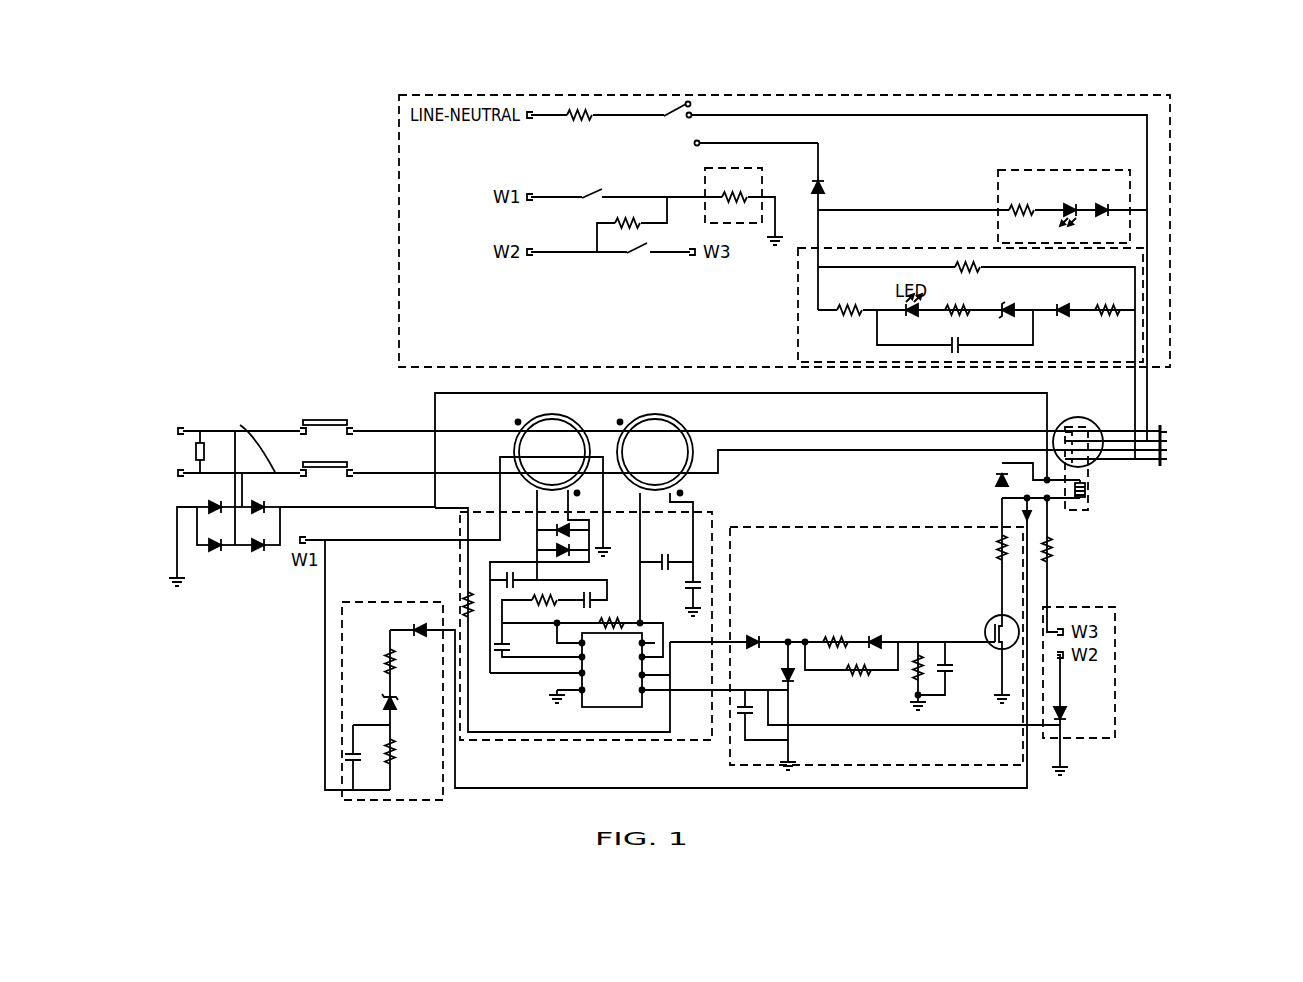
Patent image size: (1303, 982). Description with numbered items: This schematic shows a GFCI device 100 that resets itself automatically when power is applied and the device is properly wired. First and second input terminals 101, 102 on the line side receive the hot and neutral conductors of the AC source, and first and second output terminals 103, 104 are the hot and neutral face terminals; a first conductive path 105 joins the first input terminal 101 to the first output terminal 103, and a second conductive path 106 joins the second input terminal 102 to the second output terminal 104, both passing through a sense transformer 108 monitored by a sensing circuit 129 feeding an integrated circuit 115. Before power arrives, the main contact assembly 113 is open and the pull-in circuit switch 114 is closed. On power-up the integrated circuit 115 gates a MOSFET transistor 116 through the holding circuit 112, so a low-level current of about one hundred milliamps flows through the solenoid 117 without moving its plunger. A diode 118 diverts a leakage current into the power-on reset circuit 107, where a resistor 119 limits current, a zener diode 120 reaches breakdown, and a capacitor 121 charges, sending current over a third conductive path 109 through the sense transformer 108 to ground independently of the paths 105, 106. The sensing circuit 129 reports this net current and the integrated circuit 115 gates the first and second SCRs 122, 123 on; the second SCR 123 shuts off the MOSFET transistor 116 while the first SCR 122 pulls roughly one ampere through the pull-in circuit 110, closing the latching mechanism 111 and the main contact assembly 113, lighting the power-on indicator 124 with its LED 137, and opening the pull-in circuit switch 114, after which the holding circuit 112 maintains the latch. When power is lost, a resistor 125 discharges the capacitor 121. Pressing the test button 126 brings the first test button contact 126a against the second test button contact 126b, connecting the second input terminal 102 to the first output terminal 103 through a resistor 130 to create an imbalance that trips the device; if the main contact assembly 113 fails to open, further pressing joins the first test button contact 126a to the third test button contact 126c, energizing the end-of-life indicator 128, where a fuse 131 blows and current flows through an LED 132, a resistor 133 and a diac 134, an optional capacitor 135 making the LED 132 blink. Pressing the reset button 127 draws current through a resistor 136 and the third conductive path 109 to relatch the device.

The GFCI device 100 is at (121, 141).
The first input terminal 101 is at (173, 425).
The second input terminal 102 is at (177, 475).
The first output terminal 103 is at (1169, 432).
The second output terminal 104 is at (1169, 467).
The first conductive path 105 is at (288, 430).
The second conductive path 106 is at (251, 433).
The power-on reset circuit 107 is at (446, 800).
The sense transformer 108 is at (556, 391).
The third conductive path 109 is at (498, 458).
The pull-in circuit 110 is at (1105, 740).
The latching mechanism 111 is at (1090, 509).
The holding circuit 112 is at (883, 526).
The main contact assembly 113 is at (1087, 420).
The pull-in circuit switch 114 is at (638, 252).
The integrated circuit 115 is at (618, 710).
The MOSFET transistor 116 is at (985, 630).
The solenoid 117 is at (1086, 489).
The diode 118 is at (424, 630).
The resistor 119 is at (392, 656).
The zener diode 120 is at (389, 704).
The capacitor 121 is at (350, 758).
The SCR1 122 is at (1060, 710).
The SCR2 123 is at (794, 674).
The power-on indicator 124 is at (1040, 168).
The resistor 125 is at (392, 751).
The test button 126 is at (668, 117).
The first test button contact 126a is at (686, 102).
The second test button contact 126b is at (691, 112).
The third test button contact 126c is at (694, 145).
The reset button 127 is at (597, 188).
The end-of-life indicator 128 is at (797, 308).
The sensing circuit 129 is at (521, 688).
The resistor 130 is at (574, 110).
The fuse 131 is at (965, 265).
The LED 132 is at (892, 293).
The resistor 133 is at (958, 303).
The diac 134 is at (1010, 299).
The capacitor 135 is at (955, 352).
The resistor 136 is at (620, 218).
The LED 137 is at (1065, 175).